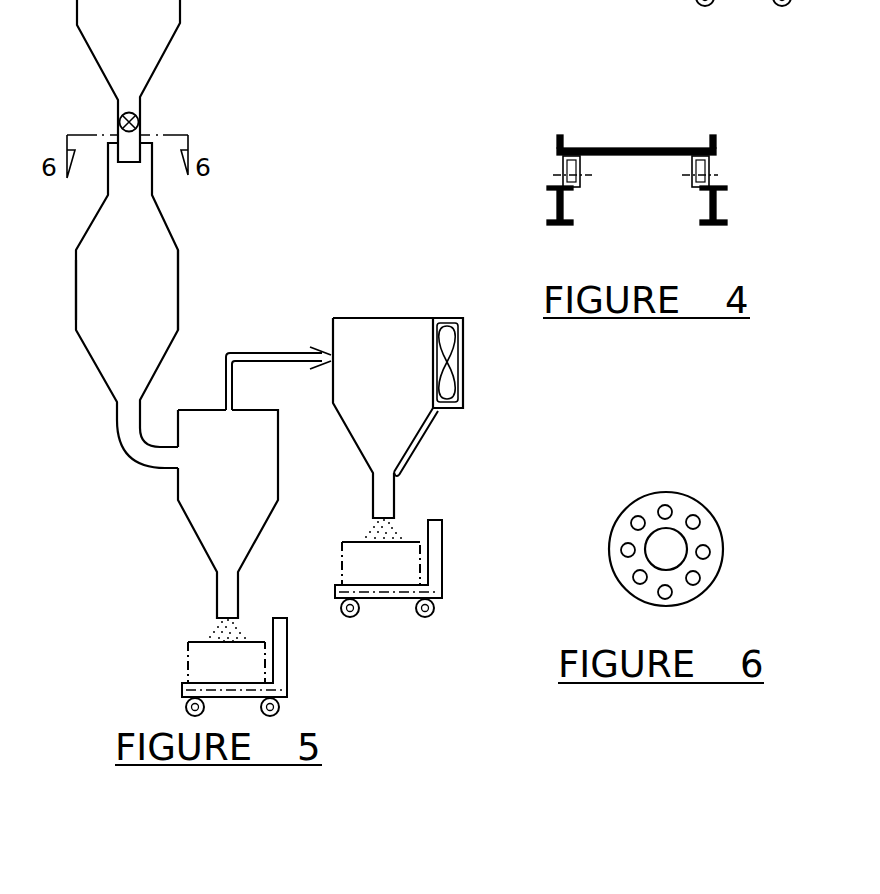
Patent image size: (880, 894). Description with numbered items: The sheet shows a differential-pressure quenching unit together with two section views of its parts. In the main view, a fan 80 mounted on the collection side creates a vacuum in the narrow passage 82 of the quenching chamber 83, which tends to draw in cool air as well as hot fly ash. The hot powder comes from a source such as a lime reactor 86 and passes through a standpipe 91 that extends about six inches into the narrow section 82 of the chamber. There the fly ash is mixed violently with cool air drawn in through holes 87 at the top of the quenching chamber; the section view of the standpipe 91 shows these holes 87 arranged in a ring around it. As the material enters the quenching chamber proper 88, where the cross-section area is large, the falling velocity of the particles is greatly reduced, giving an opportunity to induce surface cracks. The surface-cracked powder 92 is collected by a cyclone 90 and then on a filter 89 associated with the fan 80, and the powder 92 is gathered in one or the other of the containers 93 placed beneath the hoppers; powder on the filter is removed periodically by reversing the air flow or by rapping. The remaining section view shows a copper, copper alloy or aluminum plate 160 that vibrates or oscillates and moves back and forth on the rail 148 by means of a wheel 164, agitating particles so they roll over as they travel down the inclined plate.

In FIG. 5, the lime reactor 86 is at (100, 81).
In FIG. 5, the standpipe 91 is at (146, 129).
In FIG. 6, the standpipe 91 is at (672, 538).
In FIG. 5, the narrow passage 82 is at (143, 178).
In FIG. 5, the quenching chamber 83 is at (183, 268).
In FIG. 5, the quenching chamber proper 88 is at (157, 297).
In FIG. 5, the fan 80 is at (448, 358).
In FIG. 5, the filter 89 is at (423, 438).
In FIG. 5, the cyclone 90 is at (220, 523).
In FIG. 5, the powder 92 is at (213, 628).
In FIG. 5, the containers 93 is at (207, 665).
In FIG. 4, the plate 160 is at (635, 148).
In FIG. 4, the rail 148 is at (553, 207).
In FIG. 4, the wheel 164 is at (582, 167).
In FIG. 6, the holes 87 is at (623, 546).